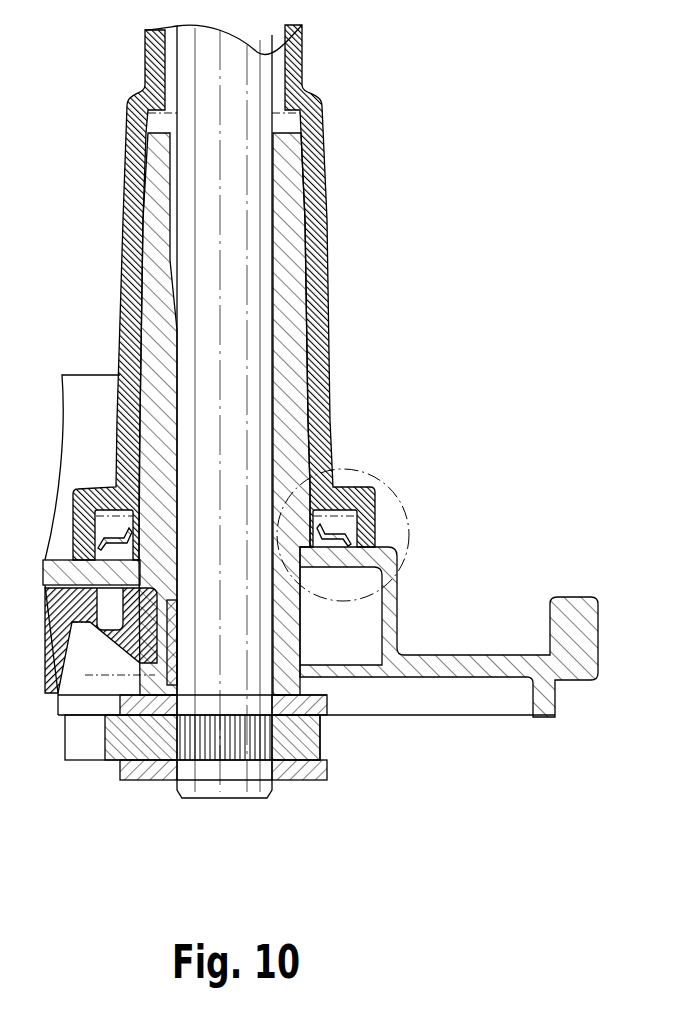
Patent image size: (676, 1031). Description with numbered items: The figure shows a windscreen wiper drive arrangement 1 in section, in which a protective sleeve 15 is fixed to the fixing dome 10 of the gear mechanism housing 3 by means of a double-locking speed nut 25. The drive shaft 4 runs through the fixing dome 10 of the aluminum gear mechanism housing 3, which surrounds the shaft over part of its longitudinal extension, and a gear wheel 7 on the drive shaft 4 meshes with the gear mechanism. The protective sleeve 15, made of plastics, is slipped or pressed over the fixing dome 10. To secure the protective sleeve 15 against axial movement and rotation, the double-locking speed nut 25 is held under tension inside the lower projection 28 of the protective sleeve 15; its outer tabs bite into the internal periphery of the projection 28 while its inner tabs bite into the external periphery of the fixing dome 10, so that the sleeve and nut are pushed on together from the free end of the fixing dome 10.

The windscreen wiper drive arrangement 1 is at (500, 229).
The gear mechanism housing 3 is at (557, 613).
The drive shaft 4 is at (253, 82).
The gear wheel 7 is at (137, 743).
The fixing dome 10 is at (293, 408).
The protective sleeve 15 is at (320, 270).
The double-locking speed nut 25 is at (390, 506).
The projection 28 is at (355, 488).